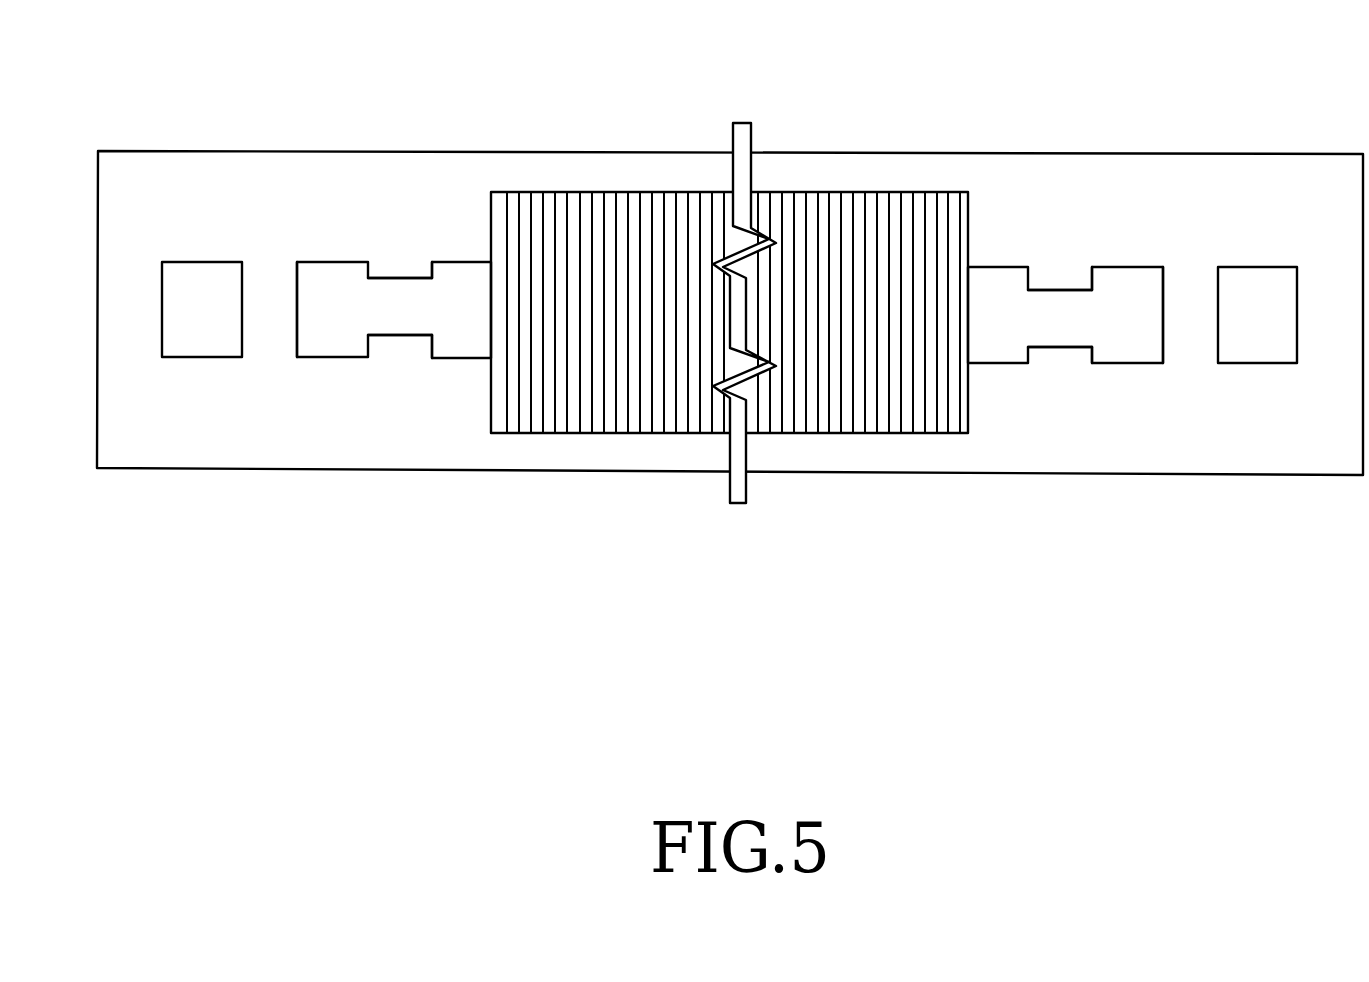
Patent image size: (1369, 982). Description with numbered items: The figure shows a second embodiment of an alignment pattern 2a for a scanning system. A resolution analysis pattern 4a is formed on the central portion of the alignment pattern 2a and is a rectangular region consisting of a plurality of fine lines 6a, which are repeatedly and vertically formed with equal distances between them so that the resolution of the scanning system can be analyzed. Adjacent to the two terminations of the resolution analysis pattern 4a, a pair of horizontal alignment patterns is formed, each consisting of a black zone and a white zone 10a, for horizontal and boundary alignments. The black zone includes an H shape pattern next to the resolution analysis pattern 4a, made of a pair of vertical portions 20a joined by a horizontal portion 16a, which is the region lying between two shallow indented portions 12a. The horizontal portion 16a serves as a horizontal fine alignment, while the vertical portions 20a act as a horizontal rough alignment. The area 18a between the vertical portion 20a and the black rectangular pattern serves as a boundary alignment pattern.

The alignment pattern 2a is at (1232, 110).
The resolution analysis pattern 4a is at (823, 192).
The fine lines 6a is at (913, 238).
The white zone 10a is at (1130, 250).
The shallow indented portion 12a is at (1062, 268).
The horizontal portion 16a is at (418, 300).
The area 18a is at (267, 285).
The vertical portions 20a is at (327, 310).